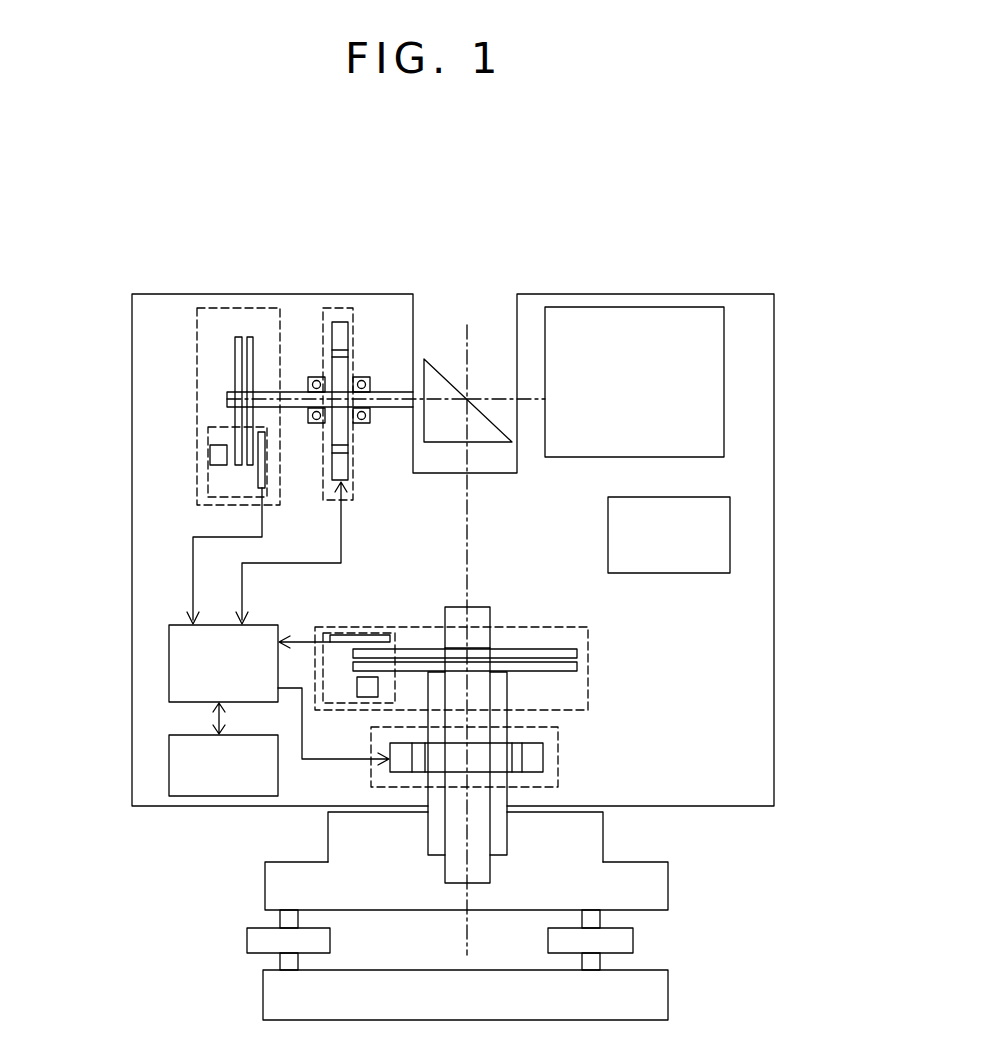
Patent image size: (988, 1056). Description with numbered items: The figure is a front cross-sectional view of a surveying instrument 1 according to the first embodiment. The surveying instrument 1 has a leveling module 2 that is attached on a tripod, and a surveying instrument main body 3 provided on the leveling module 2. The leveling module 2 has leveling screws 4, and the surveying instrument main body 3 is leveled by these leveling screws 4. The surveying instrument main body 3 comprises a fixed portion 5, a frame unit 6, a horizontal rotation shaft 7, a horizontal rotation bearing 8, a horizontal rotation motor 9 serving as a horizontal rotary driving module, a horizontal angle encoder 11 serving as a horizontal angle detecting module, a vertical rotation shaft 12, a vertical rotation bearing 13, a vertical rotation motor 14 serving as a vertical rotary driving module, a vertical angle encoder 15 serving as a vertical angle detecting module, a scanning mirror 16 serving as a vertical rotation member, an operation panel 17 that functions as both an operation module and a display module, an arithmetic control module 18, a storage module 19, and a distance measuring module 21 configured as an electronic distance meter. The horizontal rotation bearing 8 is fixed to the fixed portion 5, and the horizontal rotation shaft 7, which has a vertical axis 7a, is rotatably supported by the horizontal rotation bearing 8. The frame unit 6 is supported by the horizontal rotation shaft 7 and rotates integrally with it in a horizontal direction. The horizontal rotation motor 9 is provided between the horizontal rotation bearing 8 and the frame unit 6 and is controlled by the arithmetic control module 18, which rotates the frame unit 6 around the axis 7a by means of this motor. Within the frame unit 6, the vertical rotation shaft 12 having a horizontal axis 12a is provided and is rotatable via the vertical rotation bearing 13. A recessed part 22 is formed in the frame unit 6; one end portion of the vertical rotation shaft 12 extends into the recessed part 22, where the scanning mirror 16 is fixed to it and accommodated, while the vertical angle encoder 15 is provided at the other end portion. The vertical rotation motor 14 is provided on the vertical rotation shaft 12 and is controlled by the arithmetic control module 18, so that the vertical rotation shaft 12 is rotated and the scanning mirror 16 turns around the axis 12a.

The surveying instrument 1 is at (73, 226).
The leveling module 2 is at (250, 890).
The surveying instrument main body 3 is at (778, 357).
The leveling screws 4 is at (247, 940).
The fixed portion 5 is at (603, 838).
The frame unit 6 is at (132, 468).
The horizontal rotation shaft 7 is at (490, 643).
The vertical axis 7a is at (467, 552).
The horizontal rotation bearing 8 is at (507, 823).
The horizontal rotation motor 9 is at (558, 761).
The horizontal angle encoder 11 is at (588, 646).
The vertical rotation shaft 12 is at (388, 410).
The horizontal axis 12a is at (217, 399).
The vertical rotation bearing 13 is at (370, 376).
The vertical rotation motor 14 is at (333, 308).
The vertical angle encoder 15 is at (222, 308).
The scanning mirror 16 is at (428, 361).
The operation panel 17 is at (730, 525).
The arithmetic control module 18 is at (169, 664).
The storage module 19 is at (169, 761).
The distance measuring module 21 is at (612, 307).
The recessed part 22 is at (455, 308).